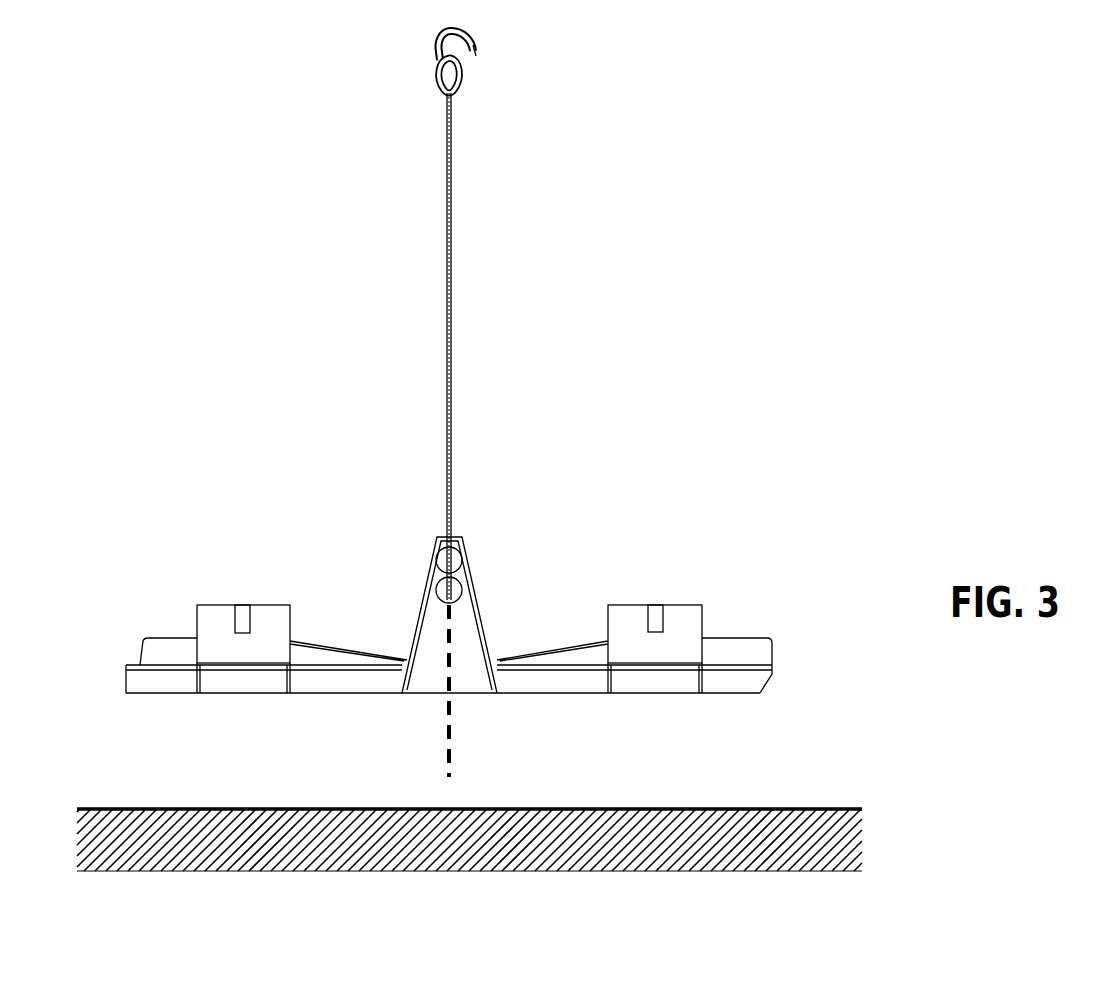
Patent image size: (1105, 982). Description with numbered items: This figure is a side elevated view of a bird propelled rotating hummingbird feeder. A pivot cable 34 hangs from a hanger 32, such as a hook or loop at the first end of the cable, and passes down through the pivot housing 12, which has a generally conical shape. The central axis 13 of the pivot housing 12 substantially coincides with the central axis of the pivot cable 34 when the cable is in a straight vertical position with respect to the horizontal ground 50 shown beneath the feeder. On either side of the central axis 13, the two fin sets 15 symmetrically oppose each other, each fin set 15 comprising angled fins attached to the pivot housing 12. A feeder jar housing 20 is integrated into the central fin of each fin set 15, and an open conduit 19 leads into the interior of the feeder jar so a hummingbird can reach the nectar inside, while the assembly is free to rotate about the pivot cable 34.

The pivot housing 12 is at (470, 565).
The central axis 13 is at (460, 731).
The fin set 15 is at (133, 626).
The open conduit 19 is at (653, 602).
The feeder jar housing 20 is at (202, 682).
The hanger 32 is at (470, 58).
The pivot cable 34 is at (449, 309).
The horizontal ground 50 is at (762, 808).